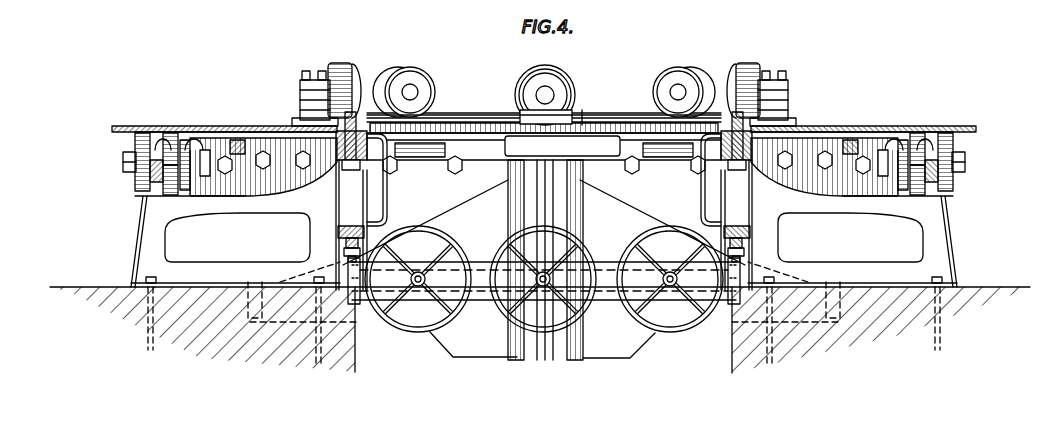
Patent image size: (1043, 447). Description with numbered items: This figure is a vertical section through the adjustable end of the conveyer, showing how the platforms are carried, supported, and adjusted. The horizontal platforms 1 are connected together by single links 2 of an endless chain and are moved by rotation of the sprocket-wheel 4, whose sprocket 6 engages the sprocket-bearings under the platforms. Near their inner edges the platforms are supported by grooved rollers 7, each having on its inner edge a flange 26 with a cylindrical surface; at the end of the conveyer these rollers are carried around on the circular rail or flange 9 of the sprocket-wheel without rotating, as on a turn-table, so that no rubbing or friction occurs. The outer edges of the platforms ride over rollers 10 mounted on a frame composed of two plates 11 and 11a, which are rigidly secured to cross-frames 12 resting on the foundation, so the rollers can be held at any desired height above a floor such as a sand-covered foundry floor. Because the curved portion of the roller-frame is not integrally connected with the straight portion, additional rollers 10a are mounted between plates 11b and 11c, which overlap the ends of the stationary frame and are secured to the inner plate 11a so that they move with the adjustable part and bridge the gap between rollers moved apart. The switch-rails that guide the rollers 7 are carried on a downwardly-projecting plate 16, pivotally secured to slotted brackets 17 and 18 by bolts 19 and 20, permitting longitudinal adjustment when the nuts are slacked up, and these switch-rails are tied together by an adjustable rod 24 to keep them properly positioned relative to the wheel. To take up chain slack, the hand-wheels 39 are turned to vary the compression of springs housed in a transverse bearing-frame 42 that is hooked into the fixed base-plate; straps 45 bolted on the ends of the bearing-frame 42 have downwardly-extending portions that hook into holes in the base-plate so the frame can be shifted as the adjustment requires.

The horizontal platform 1 is at (227, 127).
The link 2 is at (233, 151).
The sprocket-wheel 4 is at (502, 134).
The sprocket 6 is at (467, 143).
The roller 7 is at (515, 86).
The circular rail or flange 9 is at (582, 118).
The roller 10 is at (138, 150).
The additional roller 10a is at (169, 193).
The plate 11 is at (133, 172).
The inner plate 11a is at (133, 182).
The plate 11b is at (205, 189).
The plate 11c is at (171, 182).
The cross-frame 12 is at (238, 216).
The downwardly-projecting plate 16 is at (387, 205).
The slotted bracket 17 is at (342, 166).
The slotted bracket 18 is at (338, 233).
The bolt 19 is at (350, 170).
The bolt 20 is at (346, 232).
The adjustable rod 24 is at (615, 117).
The flange 26 is at (352, 74).
The hand-wheel 39 is at (447, 236).
The transverse bearing-frame 42 is at (610, 292).
The strap 45 is at (357, 298).